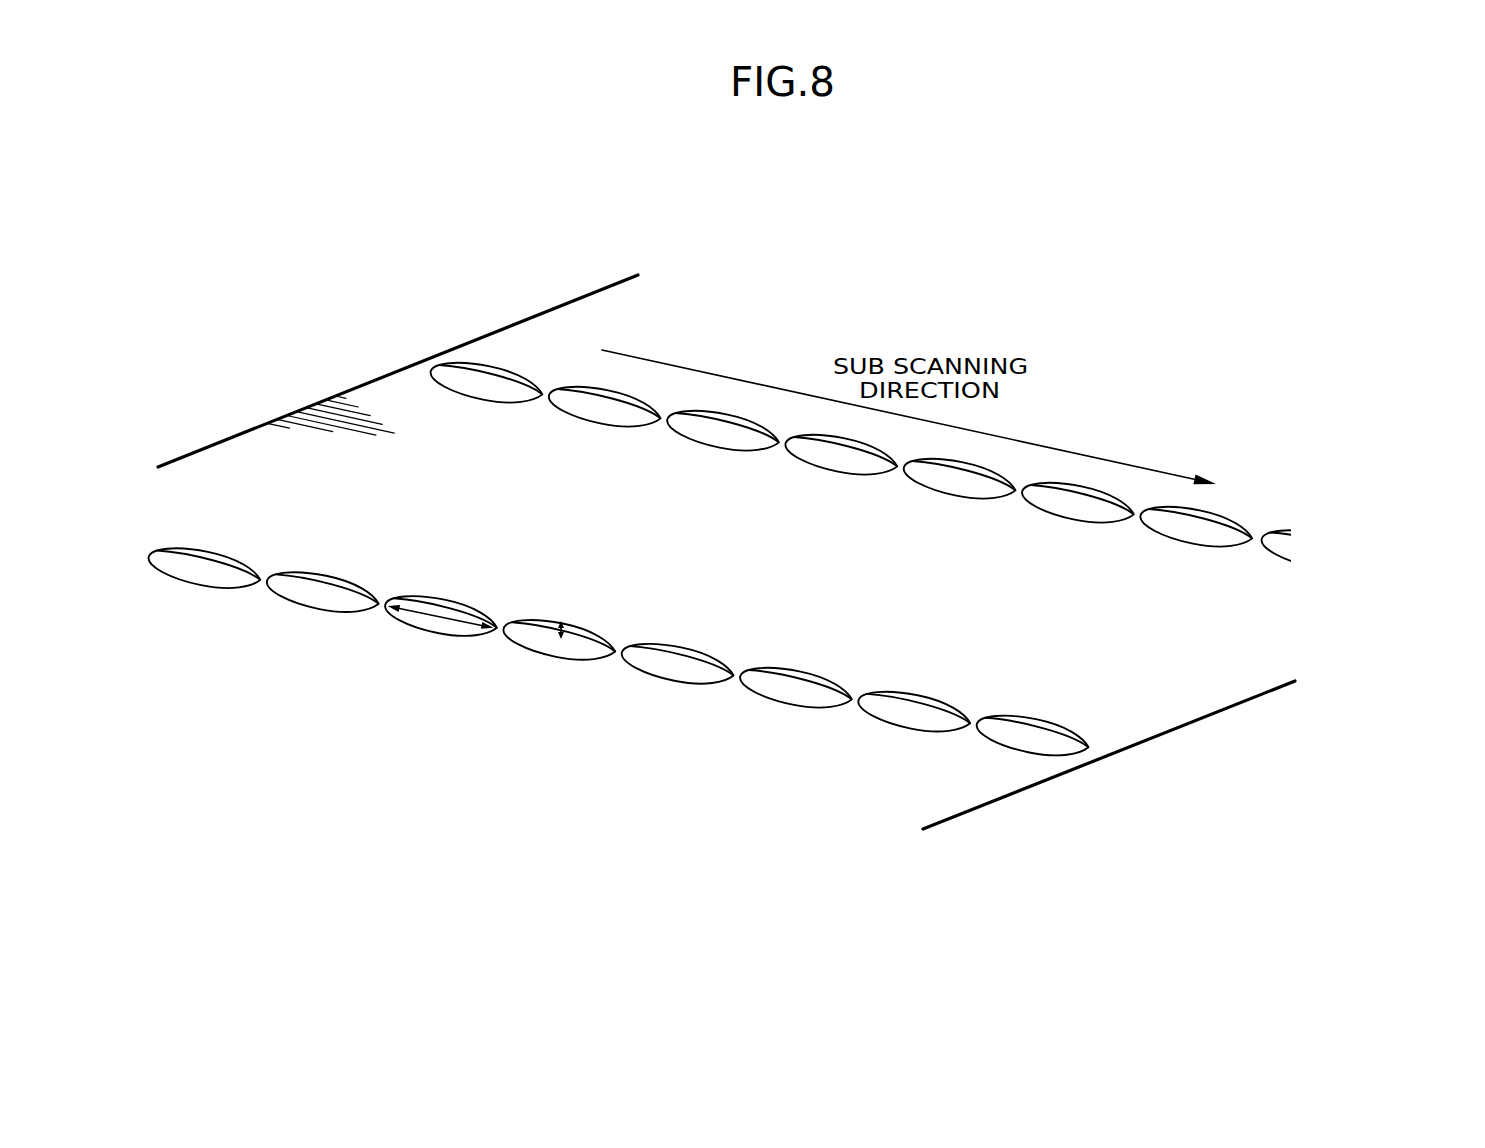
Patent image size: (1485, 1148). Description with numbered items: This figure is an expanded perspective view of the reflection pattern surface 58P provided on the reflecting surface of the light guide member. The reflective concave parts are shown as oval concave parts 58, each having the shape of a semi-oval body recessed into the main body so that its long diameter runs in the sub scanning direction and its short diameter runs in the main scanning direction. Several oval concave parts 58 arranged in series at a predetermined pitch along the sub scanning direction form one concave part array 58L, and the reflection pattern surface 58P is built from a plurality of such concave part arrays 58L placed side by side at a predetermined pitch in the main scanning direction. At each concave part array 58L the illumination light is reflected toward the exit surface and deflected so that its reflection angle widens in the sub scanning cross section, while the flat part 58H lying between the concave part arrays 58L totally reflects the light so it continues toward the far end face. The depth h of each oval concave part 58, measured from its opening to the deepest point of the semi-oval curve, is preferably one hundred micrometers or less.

The reflection pattern surface 58P is at (766, 304).
The oval concave part 58 is at (943, 483).
The concave part array 58L is at (1106, 778).
The flat part 58H is at (1178, 667).
The depth h is at (566, 631).